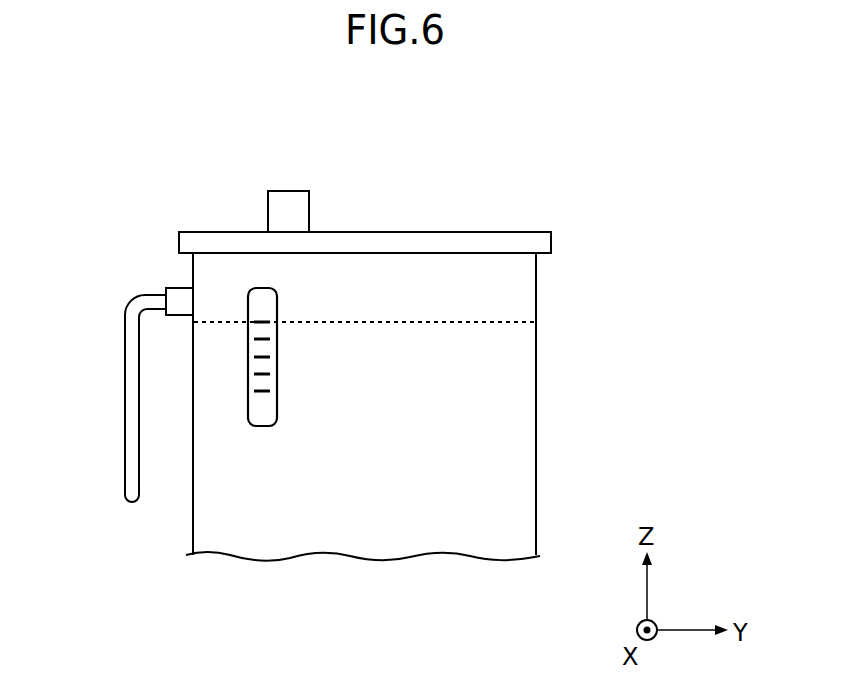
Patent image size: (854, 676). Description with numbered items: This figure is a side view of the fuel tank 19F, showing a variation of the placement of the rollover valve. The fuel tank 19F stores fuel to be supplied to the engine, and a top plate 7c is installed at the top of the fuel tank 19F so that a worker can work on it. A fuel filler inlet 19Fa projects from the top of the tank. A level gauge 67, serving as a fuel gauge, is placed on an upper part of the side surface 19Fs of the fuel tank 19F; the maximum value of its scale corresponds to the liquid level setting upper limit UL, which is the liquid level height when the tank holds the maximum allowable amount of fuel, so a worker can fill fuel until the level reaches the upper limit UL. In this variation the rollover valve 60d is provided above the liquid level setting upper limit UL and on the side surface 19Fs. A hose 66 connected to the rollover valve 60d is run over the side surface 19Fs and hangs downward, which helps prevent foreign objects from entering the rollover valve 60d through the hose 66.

The top plate 7c is at (508, 232).
The fuel filler inlet 19Fa is at (288, 191).
The fuel tank 19F is at (520, 340).
The side surface of the fuel tank 19Fs is at (193, 453).
The liquid level setting upper limit UL is at (512, 320).
The rollover valve 60d is at (180, 288).
The hose 66 is at (125, 398).
The level gauge 67 is at (248, 397).